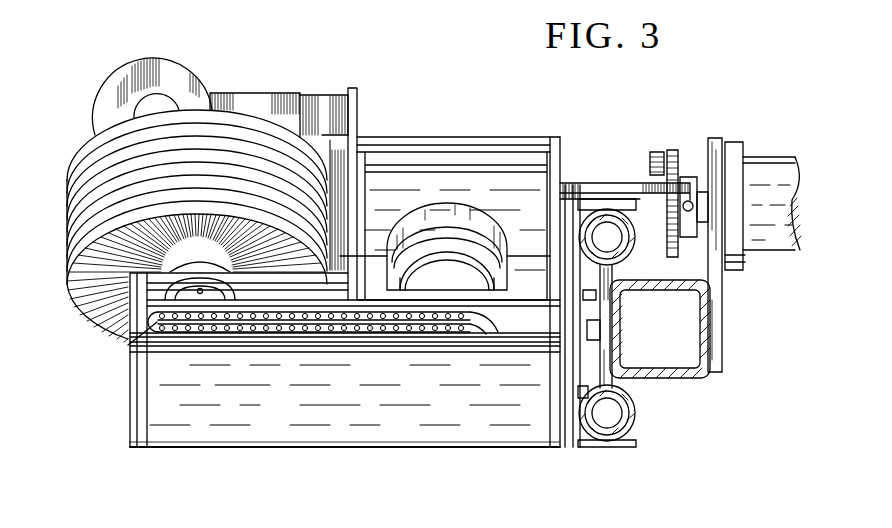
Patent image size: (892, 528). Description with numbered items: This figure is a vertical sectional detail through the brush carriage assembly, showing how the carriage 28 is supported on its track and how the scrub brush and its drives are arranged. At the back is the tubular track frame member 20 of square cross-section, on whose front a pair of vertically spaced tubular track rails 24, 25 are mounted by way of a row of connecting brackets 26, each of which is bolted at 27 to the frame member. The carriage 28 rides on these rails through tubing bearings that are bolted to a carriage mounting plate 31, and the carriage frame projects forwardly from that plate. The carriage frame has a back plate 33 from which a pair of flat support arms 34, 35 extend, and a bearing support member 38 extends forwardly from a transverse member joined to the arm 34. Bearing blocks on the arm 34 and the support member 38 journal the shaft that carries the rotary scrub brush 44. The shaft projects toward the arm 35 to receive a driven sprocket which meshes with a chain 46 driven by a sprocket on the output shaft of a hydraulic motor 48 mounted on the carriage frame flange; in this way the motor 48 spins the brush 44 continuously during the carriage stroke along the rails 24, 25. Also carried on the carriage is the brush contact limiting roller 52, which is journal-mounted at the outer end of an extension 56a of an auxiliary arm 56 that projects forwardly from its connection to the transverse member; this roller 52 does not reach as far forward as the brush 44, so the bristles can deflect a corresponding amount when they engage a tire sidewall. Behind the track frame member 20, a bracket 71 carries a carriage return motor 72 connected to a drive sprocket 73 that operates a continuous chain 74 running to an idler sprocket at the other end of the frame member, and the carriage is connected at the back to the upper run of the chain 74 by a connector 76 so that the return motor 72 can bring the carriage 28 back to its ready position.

The tubular track frame member 20 is at (696, 378).
The tubular track rail 24 is at (592, 200).
The tubular track rail 25 is at (630, 422).
The connecting bracket 26 is at (613, 278).
The bolt 27 is at (575, 365).
The carriage 28 is at (406, 122).
The carriage mounting plate 31 is at (560, 344).
The back plate 33 is at (562, 145).
The support arm 34 is at (480, 156).
The support arm 35 is at (366, 440).
The bearing support member 38 is at (314, 283).
The rotary scrub brush 44 is at (122, 345).
The chain 46 is at (310, 333).
The hydraulic motor 48 is at (426, 212).
The brush contact limiting roller 52 is at (163, 60).
The auxiliary arm 56 is at (322, 100).
The extension 56a is at (246, 100).
The bracket 71 is at (718, 136).
The carriage return motor 72 is at (770, 160).
The drive sprocket 73 is at (690, 158).
The continuous chain 74 is at (706, 252).
The connector 76 is at (658, 170).